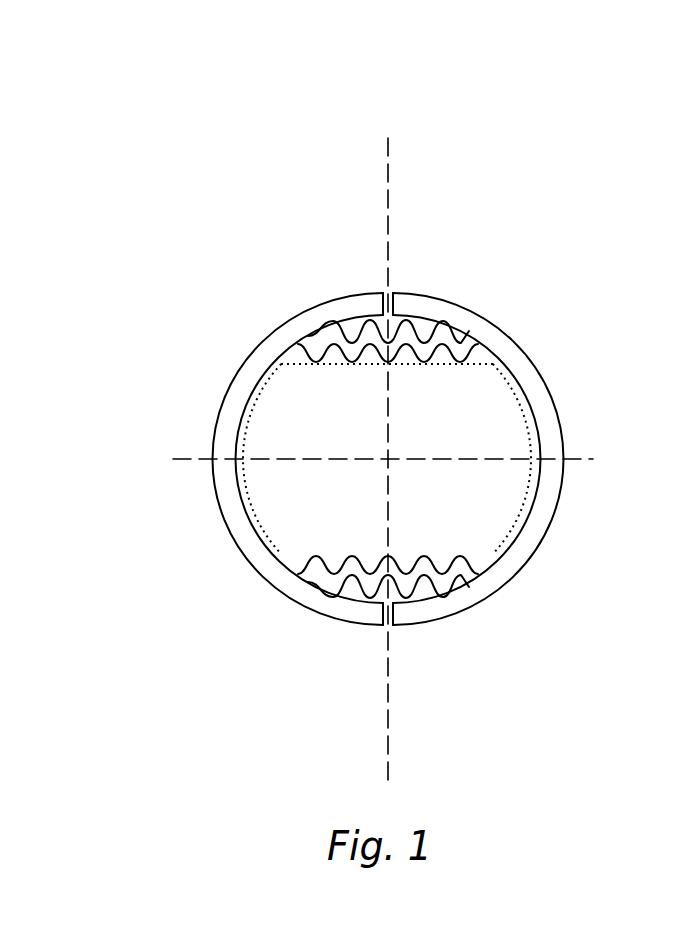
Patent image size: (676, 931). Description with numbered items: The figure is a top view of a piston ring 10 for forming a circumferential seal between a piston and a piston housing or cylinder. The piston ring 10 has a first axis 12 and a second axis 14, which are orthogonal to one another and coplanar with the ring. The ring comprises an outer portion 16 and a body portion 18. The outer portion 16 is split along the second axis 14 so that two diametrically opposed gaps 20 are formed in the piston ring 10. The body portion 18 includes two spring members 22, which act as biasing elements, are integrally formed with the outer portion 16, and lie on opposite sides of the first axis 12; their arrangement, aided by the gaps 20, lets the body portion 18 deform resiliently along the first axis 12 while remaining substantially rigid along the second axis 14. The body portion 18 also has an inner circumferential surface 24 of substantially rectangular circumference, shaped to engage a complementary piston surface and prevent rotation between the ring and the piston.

The piston ring 10 is at (185, 199).
The first axis 12 is at (197, 458).
The second axis 14 is at (388, 190).
The outer portion 16 is at (266, 358).
The body portion 18 is at (303, 335).
The gaps 20 is at (386, 302).
The spring members 22 is at (447, 333).
The inner circumferential surface 24 is at (517, 397).